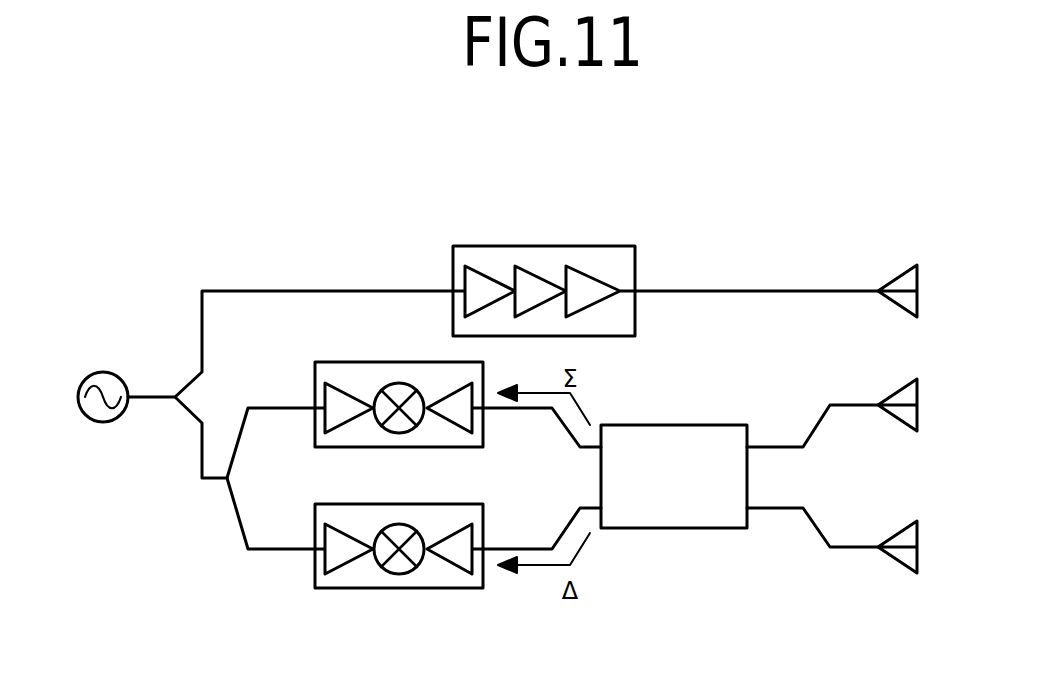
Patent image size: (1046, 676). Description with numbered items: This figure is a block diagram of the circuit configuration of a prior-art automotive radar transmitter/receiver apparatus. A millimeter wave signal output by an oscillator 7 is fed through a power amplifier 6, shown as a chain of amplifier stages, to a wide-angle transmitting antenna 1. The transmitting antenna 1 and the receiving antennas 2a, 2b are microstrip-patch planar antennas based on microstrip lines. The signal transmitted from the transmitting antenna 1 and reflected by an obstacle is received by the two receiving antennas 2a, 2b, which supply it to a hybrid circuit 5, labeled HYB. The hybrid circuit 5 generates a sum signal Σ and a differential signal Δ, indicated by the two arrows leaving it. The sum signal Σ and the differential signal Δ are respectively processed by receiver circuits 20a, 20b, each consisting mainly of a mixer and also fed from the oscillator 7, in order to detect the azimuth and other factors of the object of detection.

The transmitting antenna 1 is at (900, 266).
The receiving antenna 2a is at (900, 381).
The receiving antenna 2b is at (901, 572).
The hybrid circuit 5 is at (708, 425).
The power amplifier 6 is at (590, 246).
The oscillator 7 is at (103, 372).
The receiver circuit 20a is at (362, 362).
The receiver circuit 20b is at (413, 588).